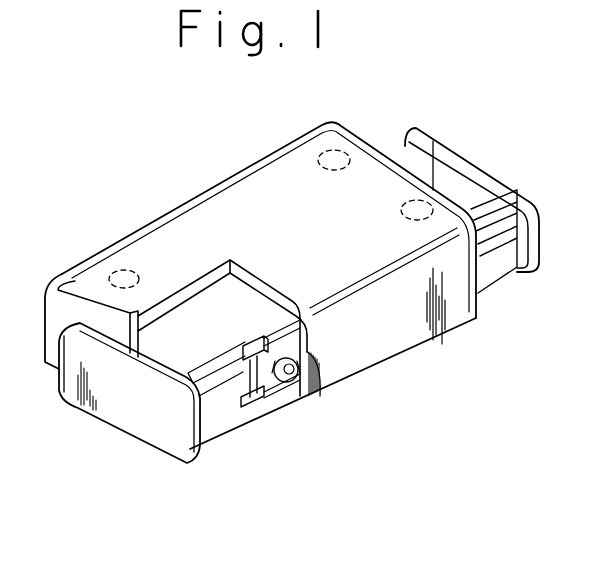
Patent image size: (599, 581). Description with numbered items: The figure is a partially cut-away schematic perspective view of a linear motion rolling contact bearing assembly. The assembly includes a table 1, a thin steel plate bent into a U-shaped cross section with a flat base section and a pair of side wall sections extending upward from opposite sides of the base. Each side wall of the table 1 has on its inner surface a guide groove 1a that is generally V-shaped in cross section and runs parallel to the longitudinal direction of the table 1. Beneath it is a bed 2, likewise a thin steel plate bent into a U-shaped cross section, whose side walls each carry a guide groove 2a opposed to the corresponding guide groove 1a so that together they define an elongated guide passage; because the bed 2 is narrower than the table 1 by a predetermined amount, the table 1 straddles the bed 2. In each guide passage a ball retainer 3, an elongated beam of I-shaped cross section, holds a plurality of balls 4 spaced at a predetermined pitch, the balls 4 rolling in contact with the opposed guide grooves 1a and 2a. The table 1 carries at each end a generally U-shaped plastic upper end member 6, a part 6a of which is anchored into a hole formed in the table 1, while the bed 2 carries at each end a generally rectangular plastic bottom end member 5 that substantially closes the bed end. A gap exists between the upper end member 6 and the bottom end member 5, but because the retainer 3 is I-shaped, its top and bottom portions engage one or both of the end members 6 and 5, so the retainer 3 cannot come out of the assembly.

The table 1 is at (410, 312).
The guide groove 1a is at (303, 398).
The bed 2 is at (217, 414).
The guide groove 2a is at (498, 238).
The ball retainer 3 is at (262, 386).
The balls 4 is at (298, 362).
The bottom end member 5 is at (120, 400).
The upper end member 6 is at (60, 303).
The part of upper end member 6a is at (122, 272).